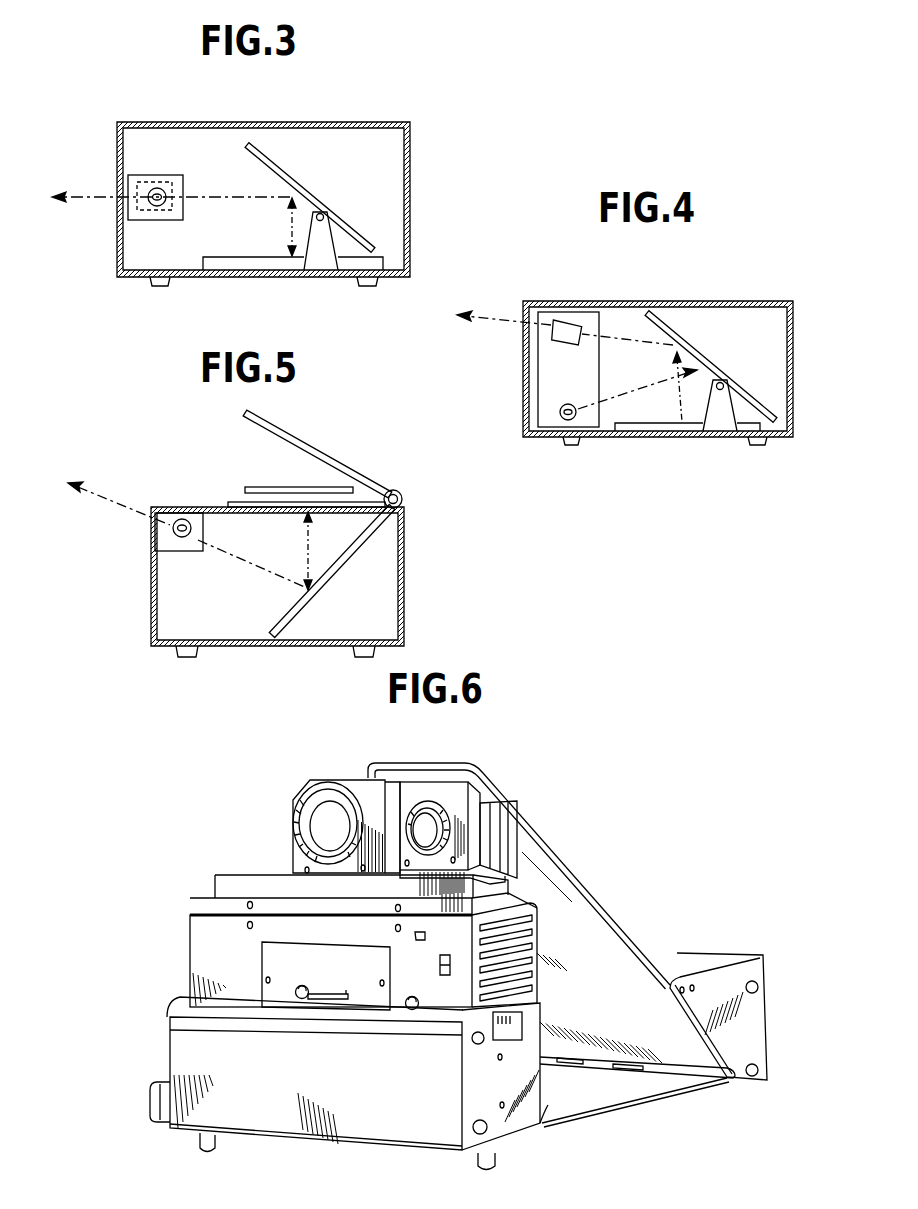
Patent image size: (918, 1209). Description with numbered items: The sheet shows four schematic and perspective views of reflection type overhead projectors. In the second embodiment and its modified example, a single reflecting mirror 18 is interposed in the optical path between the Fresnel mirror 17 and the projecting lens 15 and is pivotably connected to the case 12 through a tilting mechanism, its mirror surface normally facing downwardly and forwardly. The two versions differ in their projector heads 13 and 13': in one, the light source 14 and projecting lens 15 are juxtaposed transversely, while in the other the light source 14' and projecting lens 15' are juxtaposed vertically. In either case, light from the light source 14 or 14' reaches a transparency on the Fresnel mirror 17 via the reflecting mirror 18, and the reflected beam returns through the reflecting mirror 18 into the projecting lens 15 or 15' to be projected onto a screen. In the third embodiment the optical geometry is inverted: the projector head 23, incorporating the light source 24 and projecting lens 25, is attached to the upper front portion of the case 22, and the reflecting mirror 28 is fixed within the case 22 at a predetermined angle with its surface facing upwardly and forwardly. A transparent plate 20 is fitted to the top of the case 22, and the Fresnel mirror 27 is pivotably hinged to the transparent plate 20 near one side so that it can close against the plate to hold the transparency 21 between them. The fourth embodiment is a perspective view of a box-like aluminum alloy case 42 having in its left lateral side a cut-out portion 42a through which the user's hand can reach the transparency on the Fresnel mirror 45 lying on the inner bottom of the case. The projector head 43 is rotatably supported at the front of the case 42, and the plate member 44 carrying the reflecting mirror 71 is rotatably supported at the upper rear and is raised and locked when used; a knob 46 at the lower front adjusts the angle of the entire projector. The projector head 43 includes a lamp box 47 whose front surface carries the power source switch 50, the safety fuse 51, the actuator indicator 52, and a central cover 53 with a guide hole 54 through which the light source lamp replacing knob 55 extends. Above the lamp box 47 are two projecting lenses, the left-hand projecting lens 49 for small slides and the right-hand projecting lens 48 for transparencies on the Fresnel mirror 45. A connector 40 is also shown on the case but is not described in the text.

In FIG. 3, the case 12 is at (340, 122).
In FIG. 4, the case 12 is at (727, 301).
In FIG. 3, the projector head 13 is at (176, 149).
In FIG. 3, the light source 14 is at (122, 224).
In FIG. 3, the projecting lens 15 is at (174, 197).
In FIG. 3, the Fresnel mirror 17 is at (262, 260).
In FIG. 4, the Fresnel mirror 17 is at (668, 431).
In FIG. 3, the reflecting mirror 18 is at (313, 195).
In FIG. 4, the reflecting mirror 18 is at (697, 370).
In FIG. 4, the projector head 13' is at (581, 337).
In FIG. 4, the light source 14' is at (609, 418).
In FIG. 4, the projecting lens 15' is at (565, 344).
In FIG. 5, the transparent plate 20 is at (233, 502).
In FIG. 5, the transparency 21 is at (263, 487).
In FIG. 5, the case 22 is at (242, 646).
In FIG. 5, the projector head 23 is at (170, 555).
In FIG. 5, the light source 24 is at (160, 532).
In FIG. 5, the projecting lens 25 is at (170, 512).
In FIG. 5, the Fresnel mirror 27 is at (307, 440).
In FIG. 5, the reflecting mirror 28 is at (362, 547).
In FIG. 6, the power connector 40 is at (508, 1037).
In FIG. 6, the case 42 is at (398, 1133).
In FIG. 6, the cut-out portion 42a is at (660, 1095).
In FIG. 6, the projector head 43 is at (214, 871).
In FIG. 6, the plate member 44 is at (620, 903).
In FIG. 6, the Fresnel mirror 45 is at (560, 1105).
In FIG. 6, the knob 46 is at (160, 1120).
In FIG. 6, the lamp box 47 is at (200, 945).
In FIG. 6, the projecting lens 48 is at (322, 800).
In FIG. 6, the projecting lens 49 is at (423, 800).
In FIG. 6, the power source switch 50 is at (442, 980).
In FIG. 6, the safety fuse 51 is at (410, 1010).
In FIG. 6, the actuator indicator 52 is at (420, 940).
In FIG. 6, the cover 53 is at (273, 993).
In FIG. 6, the guide hole 54 is at (330, 1003).
In FIG. 6, the light source lamp replacing knob 55 is at (300, 1000).
In FIG. 6, the reflecting mirror 71 is at (556, 868).